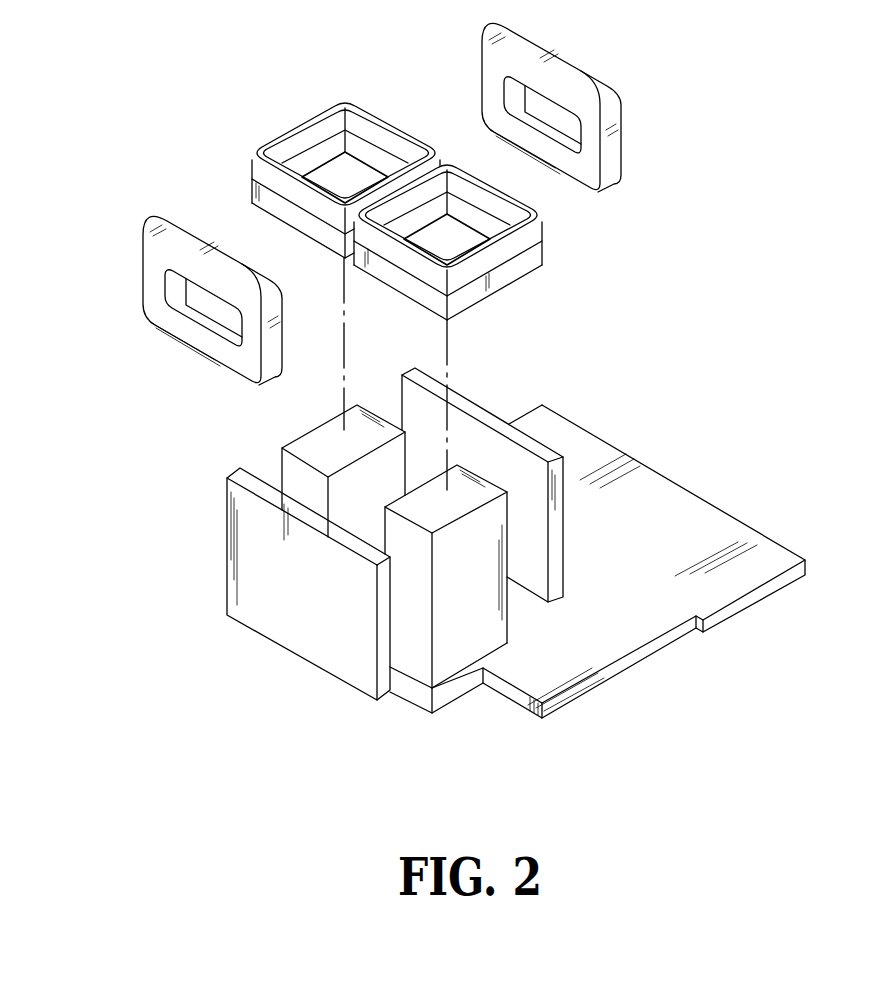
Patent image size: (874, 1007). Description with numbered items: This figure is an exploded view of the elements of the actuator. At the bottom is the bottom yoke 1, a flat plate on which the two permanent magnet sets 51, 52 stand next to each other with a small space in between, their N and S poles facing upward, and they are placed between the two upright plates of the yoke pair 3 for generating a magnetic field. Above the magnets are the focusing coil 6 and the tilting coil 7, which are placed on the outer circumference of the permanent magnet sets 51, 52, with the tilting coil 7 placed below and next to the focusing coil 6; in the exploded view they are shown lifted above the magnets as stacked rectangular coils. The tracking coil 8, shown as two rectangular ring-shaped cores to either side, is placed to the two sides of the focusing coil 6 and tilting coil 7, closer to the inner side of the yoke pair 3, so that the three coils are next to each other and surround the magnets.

The bottom yoke 1 is at (738, 578).
The yoke pair 3 is at (235, 587).
The focusing coil 6 is at (260, 172).
The tilting coil 7 is at (252, 188).
The tracking coil 8 is at (603, 92).
The permanent magnet set 51 is at (493, 551).
The permanent magnet set 52 is at (300, 443).